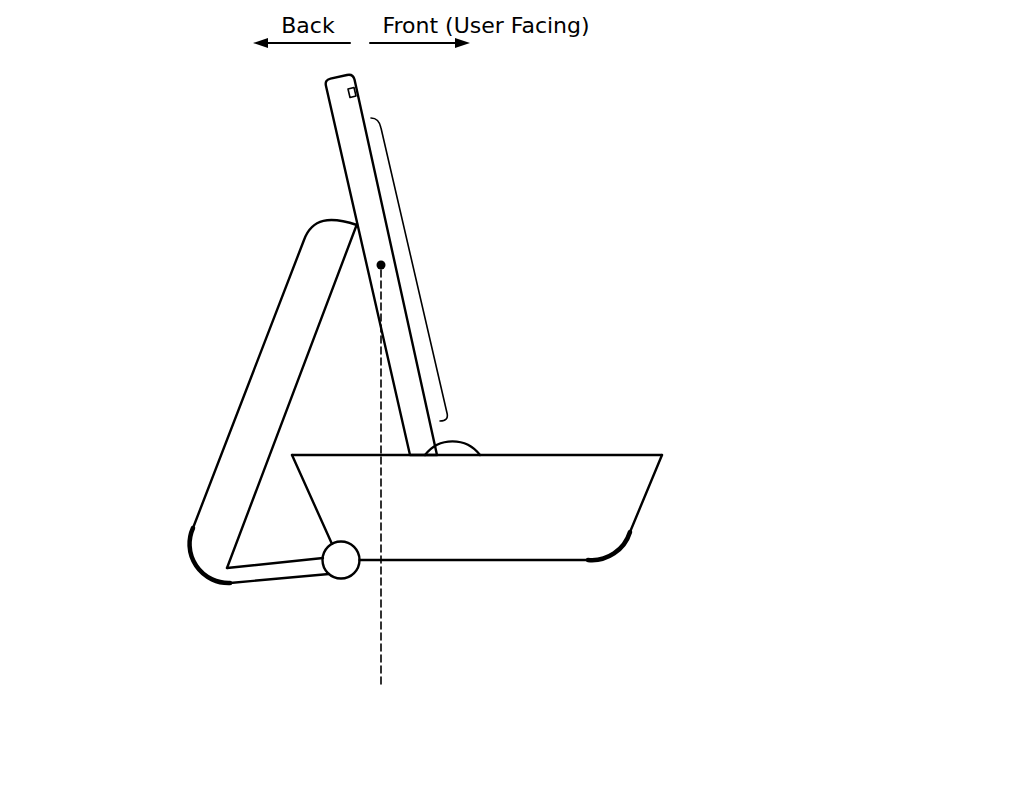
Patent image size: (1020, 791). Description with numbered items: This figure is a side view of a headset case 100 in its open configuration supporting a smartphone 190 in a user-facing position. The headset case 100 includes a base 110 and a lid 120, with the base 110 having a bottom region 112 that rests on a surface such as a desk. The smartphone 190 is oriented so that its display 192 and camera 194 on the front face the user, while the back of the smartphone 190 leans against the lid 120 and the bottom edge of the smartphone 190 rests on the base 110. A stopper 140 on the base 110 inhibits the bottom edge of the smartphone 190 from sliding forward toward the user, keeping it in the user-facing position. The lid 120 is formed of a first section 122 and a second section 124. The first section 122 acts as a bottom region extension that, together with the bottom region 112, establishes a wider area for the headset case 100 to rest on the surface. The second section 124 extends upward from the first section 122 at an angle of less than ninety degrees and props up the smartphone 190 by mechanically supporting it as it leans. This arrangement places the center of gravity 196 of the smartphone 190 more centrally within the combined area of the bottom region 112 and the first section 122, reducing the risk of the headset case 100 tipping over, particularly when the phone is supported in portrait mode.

The headset case 100 is at (760, 147).
The base 110 is at (628, 498).
The bottom region 112 is at (348, 603).
The lid 120 is at (281, 300).
The first section of the lid 122 is at (342, 603).
The second section of the lid 124 is at (299, 212).
The stopper 140 is at (473, 442).
The smartphone 190 is at (340, 130).
The display 192 is at (410, 246).
The camera 194 is at (357, 91).
The center of gravity 196 is at (382, 520).